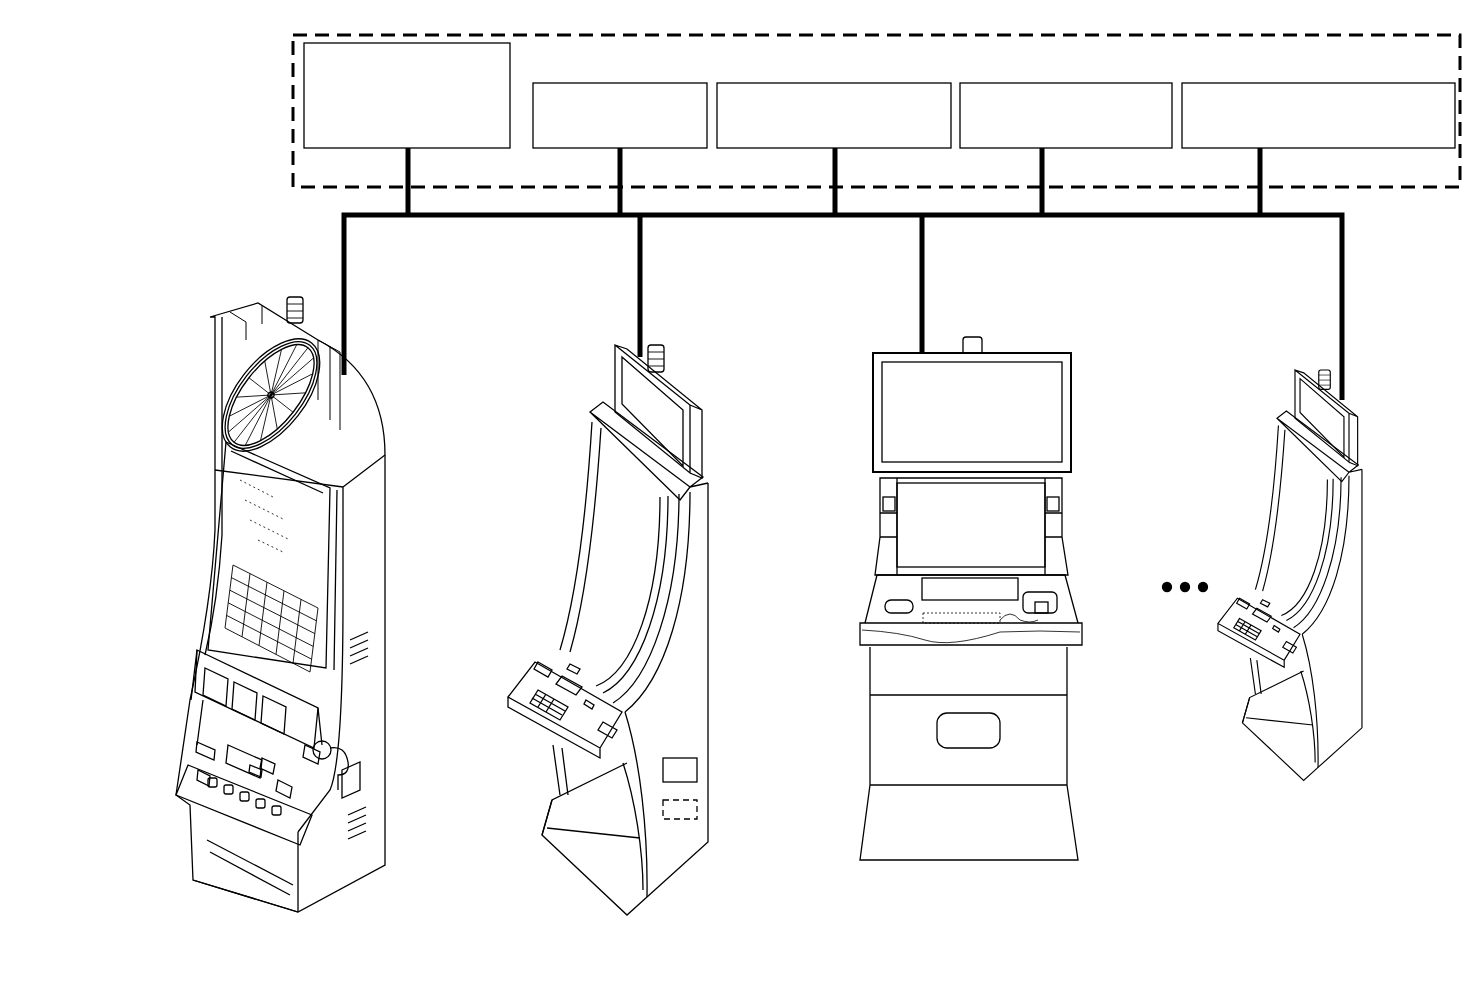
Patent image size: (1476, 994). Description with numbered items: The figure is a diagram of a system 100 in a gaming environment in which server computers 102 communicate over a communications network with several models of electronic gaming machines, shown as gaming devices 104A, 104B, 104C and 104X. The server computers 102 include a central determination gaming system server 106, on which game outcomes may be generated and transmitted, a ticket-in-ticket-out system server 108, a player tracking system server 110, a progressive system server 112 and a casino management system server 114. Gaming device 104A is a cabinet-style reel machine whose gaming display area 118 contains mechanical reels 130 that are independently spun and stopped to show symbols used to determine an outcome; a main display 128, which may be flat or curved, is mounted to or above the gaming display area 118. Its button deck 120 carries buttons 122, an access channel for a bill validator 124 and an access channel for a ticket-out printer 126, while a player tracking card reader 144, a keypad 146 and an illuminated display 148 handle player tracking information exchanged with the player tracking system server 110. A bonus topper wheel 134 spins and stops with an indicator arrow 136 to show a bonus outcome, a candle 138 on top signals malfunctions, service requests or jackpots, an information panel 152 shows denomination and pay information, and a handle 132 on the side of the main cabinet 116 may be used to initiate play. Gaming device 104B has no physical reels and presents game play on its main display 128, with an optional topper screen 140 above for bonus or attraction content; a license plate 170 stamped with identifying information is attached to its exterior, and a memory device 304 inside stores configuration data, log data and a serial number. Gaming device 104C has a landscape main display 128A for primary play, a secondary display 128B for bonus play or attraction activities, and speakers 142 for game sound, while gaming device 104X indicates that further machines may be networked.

The system 100 is at (197, 114).
The server computers 102 is at (1342, 190).
The gaming device 104A is at (171, 346).
The gaming device 104B is at (559, 400).
The gaming device 104C is at (855, 322).
The gaming device 104X is at (1263, 364).
The central determination gaming system server 106 is at (468, 148).
The ticket-in-ticket-out (TITO) system server 108 is at (660, 148).
The player tracking system server 110 is at (875, 148).
The progressive system server 112 is at (1125, 148).
The casino management system server 114 is at (1365, 148).
The main cabinet 116 is at (200, 813).
The gaming display area 118 is at (193, 675).
The button deck 120 is at (202, 790).
The buttons 122 is at (210, 774).
The bill validator 124 is at (286, 790).
The ticket-out printer 126 is at (204, 750).
The main display 128 is at (307, 527).
The main display 128A is at (1048, 525).
The secondary display 128B is at (1065, 430).
The mechanical reels 130 is at (220, 680).
The handle 132 is at (318, 746).
The bonus topper wheel 134 is at (318, 420).
The indicator arrow 136 is at (260, 335).
The candle 138 is at (306, 316).
The topper screen 140 is at (700, 438).
The speakers 142 is at (880, 496).
The player tracking card reader 144 is at (272, 766).
The keypad 146 is at (316, 752).
The illuminated display 148 is at (248, 766).
The information panel 152 is at (232, 748).
The license plate 170 is at (697, 765).
The memory device 304 is at (697, 808).